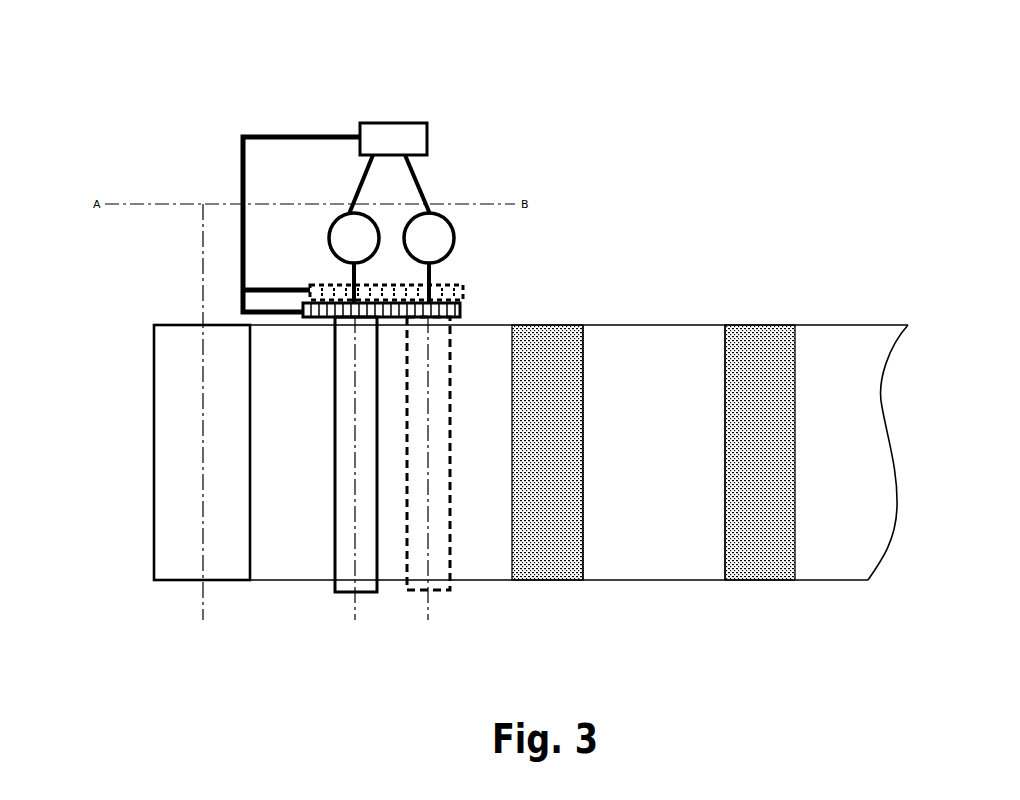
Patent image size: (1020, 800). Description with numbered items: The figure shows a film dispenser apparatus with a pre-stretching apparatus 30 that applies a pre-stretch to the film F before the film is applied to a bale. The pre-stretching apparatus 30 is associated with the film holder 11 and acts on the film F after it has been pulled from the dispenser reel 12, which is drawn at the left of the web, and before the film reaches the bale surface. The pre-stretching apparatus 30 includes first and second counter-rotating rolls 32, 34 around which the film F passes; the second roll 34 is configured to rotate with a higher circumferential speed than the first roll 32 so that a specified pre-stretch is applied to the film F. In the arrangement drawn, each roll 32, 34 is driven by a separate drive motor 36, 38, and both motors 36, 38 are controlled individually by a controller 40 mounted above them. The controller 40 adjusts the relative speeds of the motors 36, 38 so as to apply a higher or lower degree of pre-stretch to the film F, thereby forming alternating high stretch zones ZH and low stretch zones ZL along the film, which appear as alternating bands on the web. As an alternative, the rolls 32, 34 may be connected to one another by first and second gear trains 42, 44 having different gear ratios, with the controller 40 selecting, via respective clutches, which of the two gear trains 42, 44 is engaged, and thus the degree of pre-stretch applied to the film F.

The film holder 11 is at (128, 595).
The dispenser reel 12 is at (167, 483).
The pre-stretching apparatus 30 is at (225, 130).
The first roll 32 is at (358, 568).
The second roll 34 is at (438, 565).
The drive motor 36 is at (334, 221).
The drive motor 38 is at (440, 210).
The controller 40 is at (422, 123).
The first gear train 42 is at (468, 308).
The second gear train 44 is at (470, 282).
The film F is at (853, 352).
The low stretch zone ZL is at (548, 557).
The high stretch zone ZH is at (640, 557).